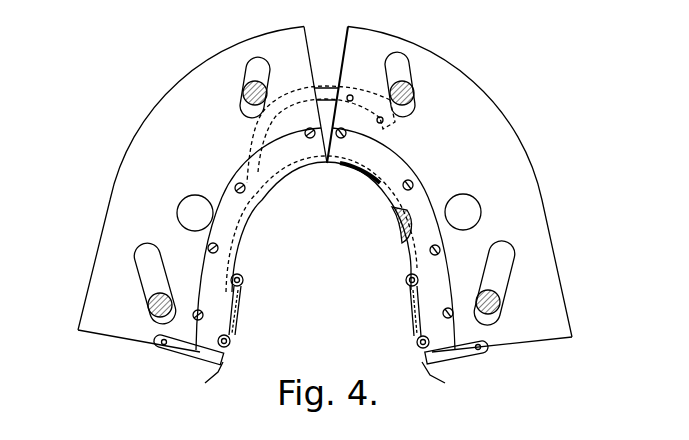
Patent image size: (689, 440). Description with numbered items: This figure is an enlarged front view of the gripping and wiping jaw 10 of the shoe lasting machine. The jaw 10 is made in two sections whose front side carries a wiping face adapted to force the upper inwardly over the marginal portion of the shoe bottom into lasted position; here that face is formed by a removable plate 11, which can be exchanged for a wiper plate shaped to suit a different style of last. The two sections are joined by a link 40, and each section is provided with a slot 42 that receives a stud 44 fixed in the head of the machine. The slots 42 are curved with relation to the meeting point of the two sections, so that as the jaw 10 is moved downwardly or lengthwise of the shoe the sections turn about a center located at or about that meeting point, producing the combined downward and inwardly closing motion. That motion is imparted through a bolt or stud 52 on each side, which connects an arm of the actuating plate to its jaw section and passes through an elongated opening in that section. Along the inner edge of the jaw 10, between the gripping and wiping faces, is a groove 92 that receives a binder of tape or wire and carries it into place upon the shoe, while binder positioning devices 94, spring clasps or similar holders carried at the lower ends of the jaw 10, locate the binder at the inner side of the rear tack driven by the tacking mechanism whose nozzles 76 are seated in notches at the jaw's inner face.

The jaw 10 is at (545, 218).
The removable plate 11 is at (240, 265).
The link 40 is at (325, 87).
The slots 42 is at (257, 63).
The studs 44 is at (243, 87).
The bolt or stud 52 is at (180, 204).
The nozzles 76 is at (420, 342).
The groove 92 is at (395, 224).
The binder positioning devices 94 is at (452, 352).